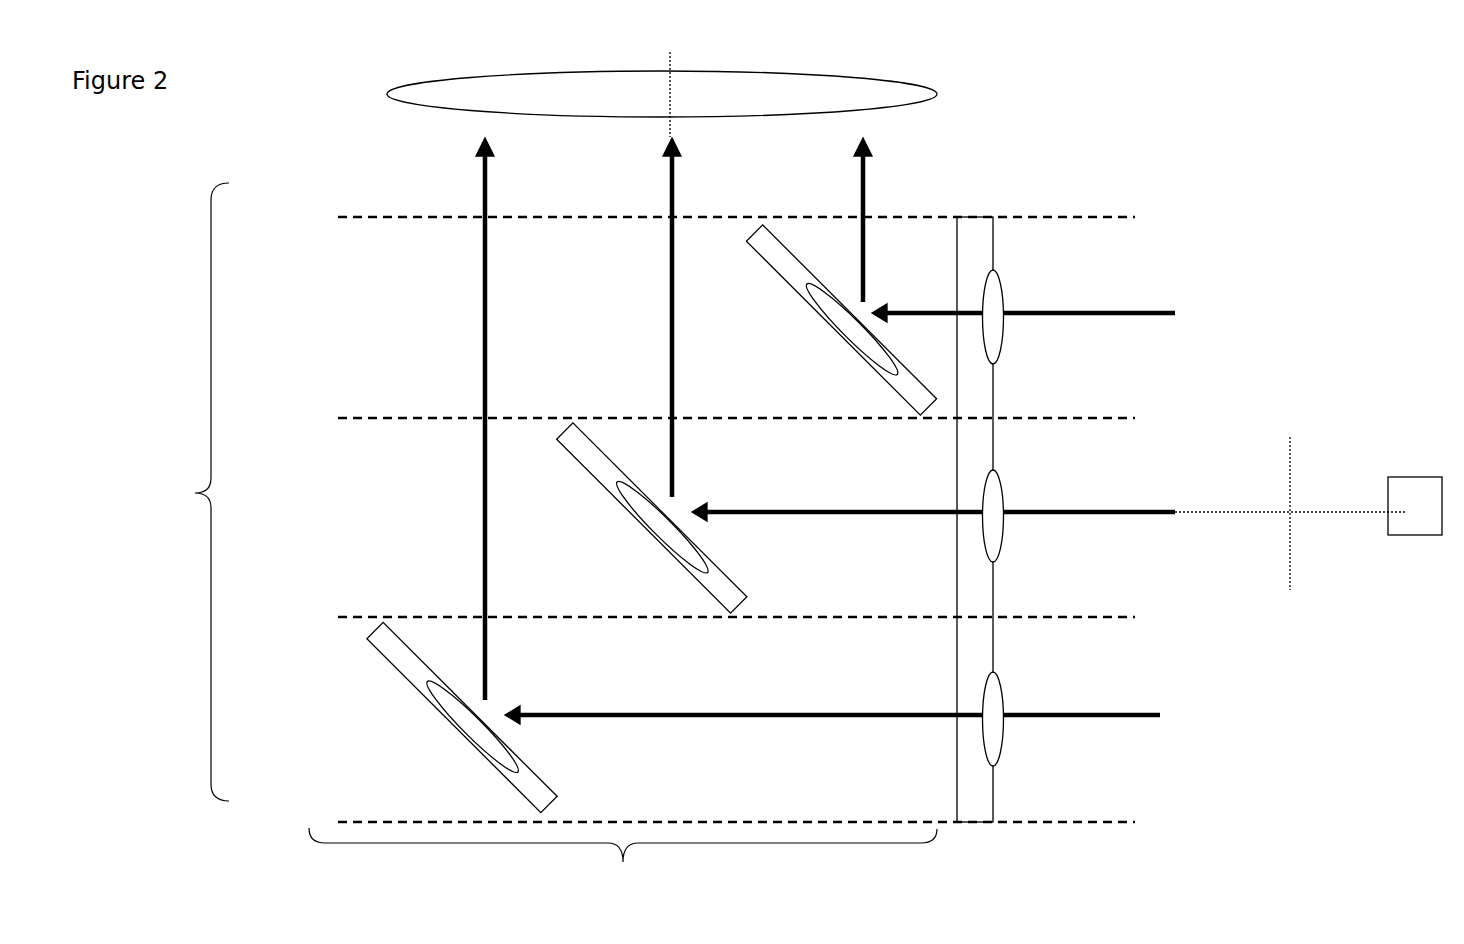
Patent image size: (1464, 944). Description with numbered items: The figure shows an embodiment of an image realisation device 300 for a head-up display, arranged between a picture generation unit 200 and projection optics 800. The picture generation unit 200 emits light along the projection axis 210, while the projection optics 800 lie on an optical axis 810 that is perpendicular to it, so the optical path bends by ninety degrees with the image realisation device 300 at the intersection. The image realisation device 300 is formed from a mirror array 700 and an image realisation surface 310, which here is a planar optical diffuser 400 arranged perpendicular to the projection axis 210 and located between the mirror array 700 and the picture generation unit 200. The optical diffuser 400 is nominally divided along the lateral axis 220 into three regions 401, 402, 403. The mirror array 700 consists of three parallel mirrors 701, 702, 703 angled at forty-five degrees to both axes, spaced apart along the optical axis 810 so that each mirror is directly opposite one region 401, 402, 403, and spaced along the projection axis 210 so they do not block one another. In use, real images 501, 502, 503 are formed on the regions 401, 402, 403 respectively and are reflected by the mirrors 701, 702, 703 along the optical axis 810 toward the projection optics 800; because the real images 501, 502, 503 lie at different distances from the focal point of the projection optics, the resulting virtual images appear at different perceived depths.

The picture generation unit 200 is at (1425, 518).
The projection axis 210 is at (1310, 508).
The lateral axis 220 is at (1292, 440).
The image realisation device 300 is at (1290, 133).
The image realisation surface 310 is at (995, 224).
The optical diffuser 400 is at (1032, 512).
The first region of the optical diffuser 401 is at (1133, 270).
The second region of the optical diffuser 402 is at (1133, 467).
The third region of the optical diffuser 403 is at (1133, 668).
The first real image 501 is at (1000, 347).
The second real image 502 is at (1000, 548).
The third real image 503 is at (1002, 748).
The mirror array 700 is at (623, 558).
The first mirror 701 is at (798, 283).
The second mirror 702 is at (610, 485).
The third mirror 703 is at (432, 695).
The projection optics 800 is at (920, 92).
The optical axis 810 is at (668, 114).